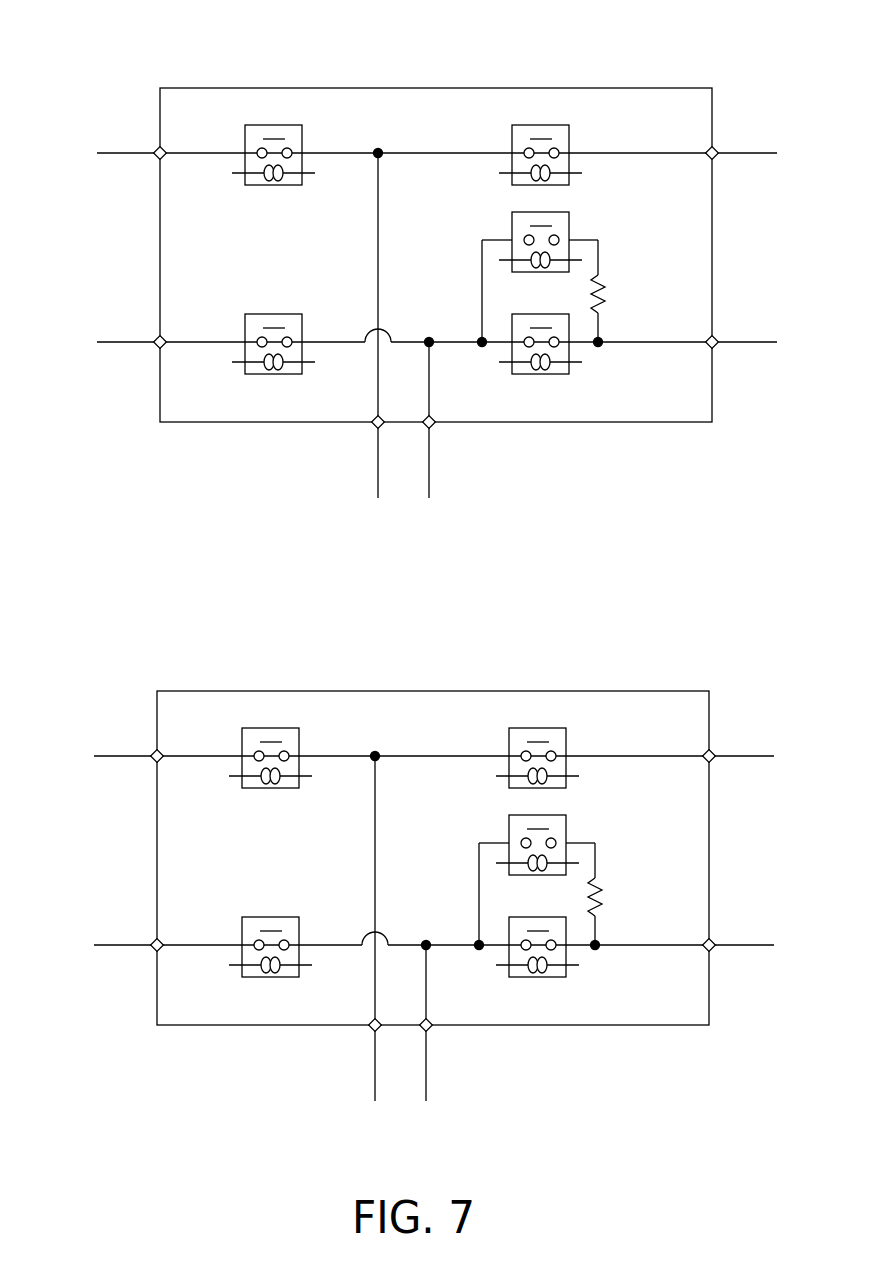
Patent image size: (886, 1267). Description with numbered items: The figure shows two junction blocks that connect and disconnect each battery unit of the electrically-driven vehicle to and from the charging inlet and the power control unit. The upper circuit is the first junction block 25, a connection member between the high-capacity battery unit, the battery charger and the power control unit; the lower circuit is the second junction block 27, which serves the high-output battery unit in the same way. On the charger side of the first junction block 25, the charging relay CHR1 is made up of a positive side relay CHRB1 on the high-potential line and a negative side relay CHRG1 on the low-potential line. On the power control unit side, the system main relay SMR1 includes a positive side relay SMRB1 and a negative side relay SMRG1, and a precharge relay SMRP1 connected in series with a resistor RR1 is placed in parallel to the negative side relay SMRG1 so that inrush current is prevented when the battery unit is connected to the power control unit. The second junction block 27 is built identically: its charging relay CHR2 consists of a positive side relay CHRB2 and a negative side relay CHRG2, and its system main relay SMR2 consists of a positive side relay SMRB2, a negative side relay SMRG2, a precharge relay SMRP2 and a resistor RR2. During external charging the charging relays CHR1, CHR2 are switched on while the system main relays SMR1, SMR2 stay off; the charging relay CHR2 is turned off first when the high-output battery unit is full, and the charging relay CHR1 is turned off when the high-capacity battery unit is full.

The first junction block 25 is at (416, 280).
The second junction block 27 is at (413, 884).
The charging relay CHR1 is at (253, 211).
The positive side relay CHRB1 is at (243, 188).
The negative side relay CHRG1 is at (245, 314).
The system main relay SMR1 is at (542, 206).
The positive side relay SMRB1 is at (570, 137).
The negative side relay SMRG1 is at (480, 337).
The precharge relay SMRP1 is at (571, 232).
The resistor RR1 is at (603, 310).
The charging relay CHR2 is at (250, 814).
The positive side relay CHRB2 is at (273, 786).
The negative side relay CHRG2 is at (273, 918).
The system main relay SMR2 is at (539, 809).
The positive side relay SMRB2 is at (575, 714).
The negative side relay SMRG2 is at (494, 916).
The precharge relay SMRP2 is at (584, 871).
The resistor RR2 is at (629, 911).